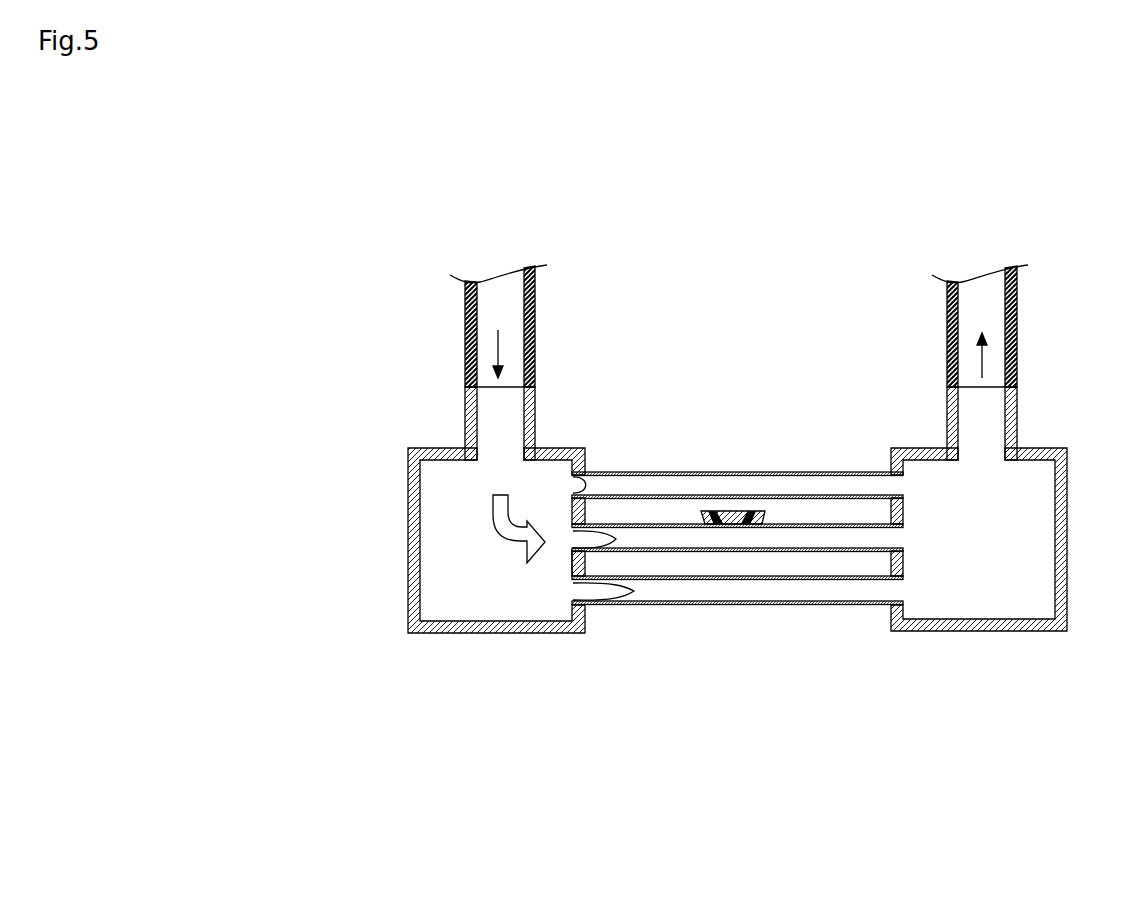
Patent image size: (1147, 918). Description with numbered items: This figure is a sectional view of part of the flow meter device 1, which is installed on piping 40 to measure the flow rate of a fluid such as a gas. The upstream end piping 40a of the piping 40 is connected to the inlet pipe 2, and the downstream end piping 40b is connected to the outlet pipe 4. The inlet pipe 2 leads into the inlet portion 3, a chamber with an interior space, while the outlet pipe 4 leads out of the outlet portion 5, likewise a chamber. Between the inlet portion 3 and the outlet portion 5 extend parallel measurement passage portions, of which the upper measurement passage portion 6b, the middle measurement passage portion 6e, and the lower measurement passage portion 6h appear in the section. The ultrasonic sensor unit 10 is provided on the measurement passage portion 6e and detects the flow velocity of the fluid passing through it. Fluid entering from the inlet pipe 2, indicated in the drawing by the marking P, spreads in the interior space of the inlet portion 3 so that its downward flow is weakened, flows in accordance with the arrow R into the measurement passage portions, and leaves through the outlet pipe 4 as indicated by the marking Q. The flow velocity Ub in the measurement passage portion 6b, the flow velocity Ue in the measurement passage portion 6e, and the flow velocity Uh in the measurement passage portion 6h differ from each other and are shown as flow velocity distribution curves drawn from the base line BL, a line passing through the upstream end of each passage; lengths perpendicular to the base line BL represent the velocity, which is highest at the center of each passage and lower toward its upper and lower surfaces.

The flow meter device 1 is at (1097, 478).
The inlet pipe 2 is at (535, 395).
The inlet portion 3 is at (467, 632).
The outlet pipe 4 is at (1013, 423).
The outlet portion 5 is at (1066, 605).
The measurement passage portion 6b is at (664, 472).
The measurement passage portion 6e is at (780, 523).
The measurement passage portion 6h is at (855, 600).
The ultrasonic sensor unit 10 is at (742, 509).
The piping 40 is at (832, 170).
The upstream end piping 40a is at (535, 310).
The downstream end piping 40b is at (945, 290).
The base line BL is at (573, 565).
The inflow P is at (500, 334).
The outflow Q is at (983, 337).
The arrow R is at (490, 523).
The flow velocity Ub is at (586, 480).
The flow velocity Ue is at (613, 535).
The flow velocity Uh is at (622, 603).